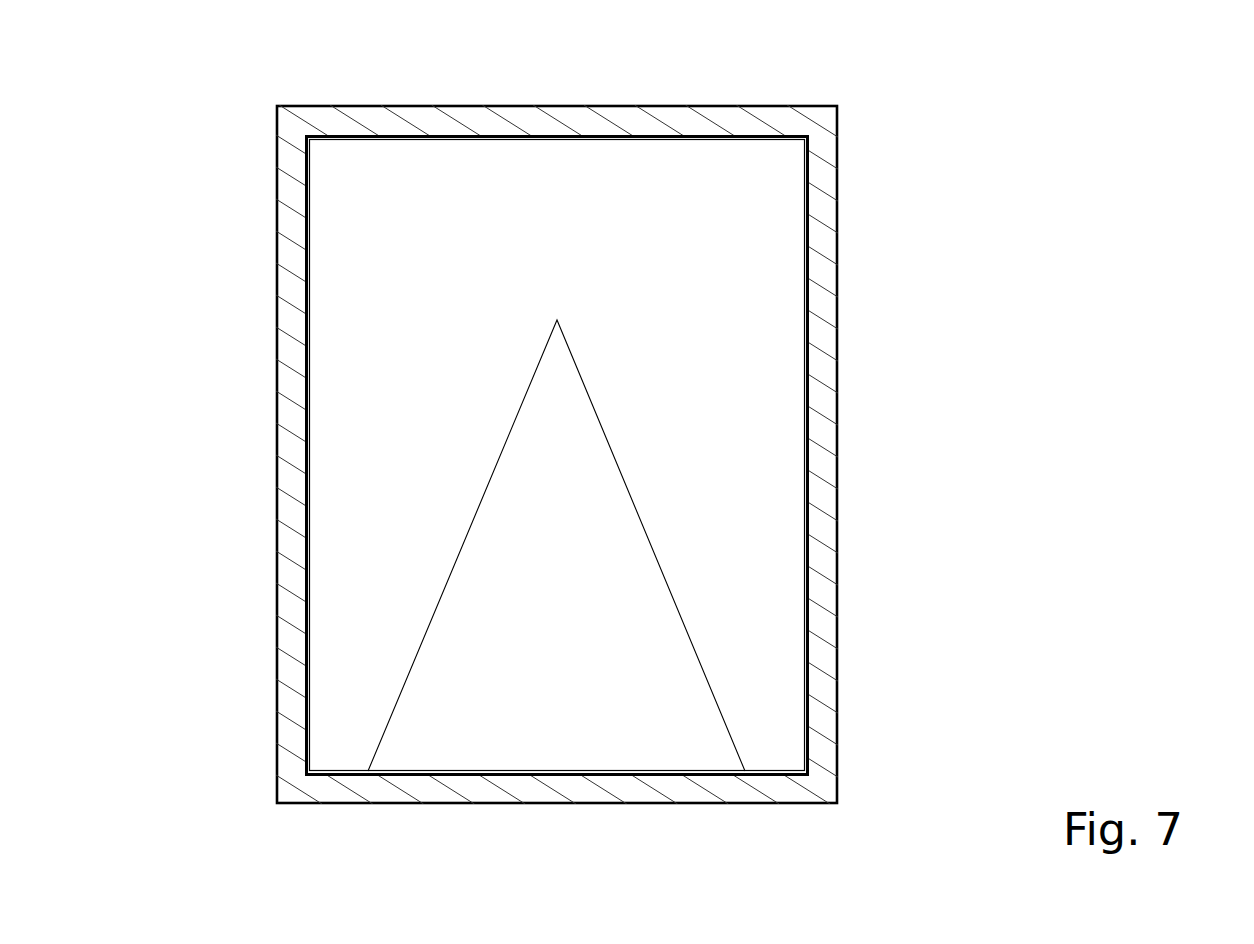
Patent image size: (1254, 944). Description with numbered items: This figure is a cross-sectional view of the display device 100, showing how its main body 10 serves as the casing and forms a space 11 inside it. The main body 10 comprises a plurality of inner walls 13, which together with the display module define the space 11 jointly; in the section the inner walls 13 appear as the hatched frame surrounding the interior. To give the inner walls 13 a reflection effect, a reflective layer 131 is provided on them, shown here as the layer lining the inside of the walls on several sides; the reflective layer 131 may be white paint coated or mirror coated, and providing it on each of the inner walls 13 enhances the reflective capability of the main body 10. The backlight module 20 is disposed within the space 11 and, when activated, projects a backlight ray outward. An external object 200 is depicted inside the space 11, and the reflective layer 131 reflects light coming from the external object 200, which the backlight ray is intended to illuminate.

The display device 100 is at (1152, 78).
The main body 10 is at (256, 409).
The space 11 is at (318, 249).
The inner walls 13 is at (632, 135).
The reflective layer 131 is at (809, 183).
The backlight module 20 is at (748, 299).
The external object 200 is at (688, 630).